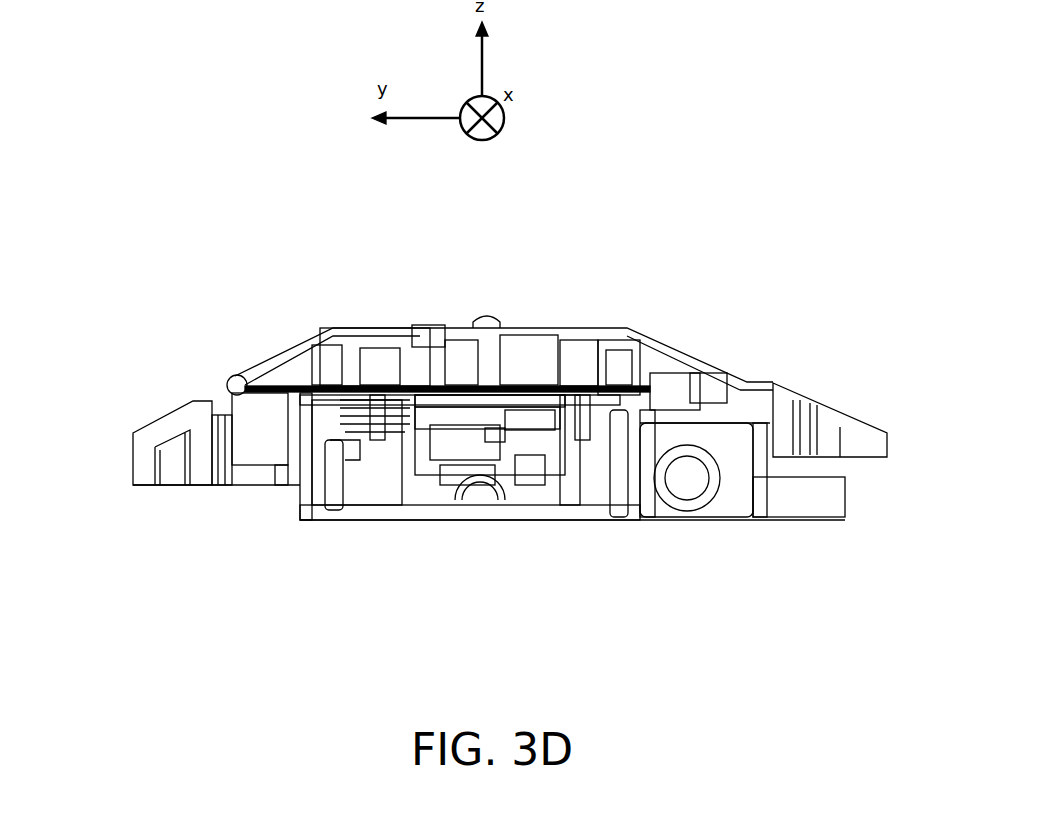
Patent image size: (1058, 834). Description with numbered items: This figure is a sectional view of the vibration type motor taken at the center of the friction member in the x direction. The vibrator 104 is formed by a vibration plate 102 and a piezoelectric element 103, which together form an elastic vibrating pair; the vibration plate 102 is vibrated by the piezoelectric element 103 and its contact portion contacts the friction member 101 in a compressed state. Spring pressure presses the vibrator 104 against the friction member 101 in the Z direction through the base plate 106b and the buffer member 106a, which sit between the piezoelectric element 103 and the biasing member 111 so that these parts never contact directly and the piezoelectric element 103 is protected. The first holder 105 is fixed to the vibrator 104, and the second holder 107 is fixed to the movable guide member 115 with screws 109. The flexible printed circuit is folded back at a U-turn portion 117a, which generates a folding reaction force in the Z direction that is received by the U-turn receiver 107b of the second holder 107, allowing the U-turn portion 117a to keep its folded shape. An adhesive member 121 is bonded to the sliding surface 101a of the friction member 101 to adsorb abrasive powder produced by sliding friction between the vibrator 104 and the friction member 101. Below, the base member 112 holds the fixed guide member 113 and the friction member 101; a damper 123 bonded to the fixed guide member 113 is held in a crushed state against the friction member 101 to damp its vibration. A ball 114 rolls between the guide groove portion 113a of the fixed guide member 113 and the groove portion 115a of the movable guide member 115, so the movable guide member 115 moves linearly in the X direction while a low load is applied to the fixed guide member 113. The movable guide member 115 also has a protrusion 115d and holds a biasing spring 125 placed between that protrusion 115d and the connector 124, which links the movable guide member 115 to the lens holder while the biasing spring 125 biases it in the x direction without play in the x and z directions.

The friction member 101 is at (510, 445).
The sliding surface 101a is at (493, 435).
The vibration plate 102 is at (498, 415).
The piezoelectric element 103 is at (497, 398).
The vibrator 104 is at (620, 185).
The first holder 105 is at (385, 376).
The buffer member 106a is at (473, 382).
The base plate 106b is at (455, 360).
The second holder 107 is at (318, 363).
The U-turn receiver 107b is at (245, 385).
The screw 109 is at (670, 397).
The biasing member 111 is at (430, 340).
The base member 112 is at (790, 395).
The fixed guide member 113 is at (403, 483).
The guide groove portion 113a is at (467, 477).
The ball 114 is at (480, 497).
The movable guide member 115 is at (333, 510).
The groove portion 115a is at (460, 513).
The protrusion 115d is at (687, 478).
The U-turn portion 117a is at (258, 411).
The adhesive member 121 is at (520, 418).
The damper 123 is at (528, 470).
The connector 124 is at (767, 508).
The biasing spring 125 is at (706, 500).